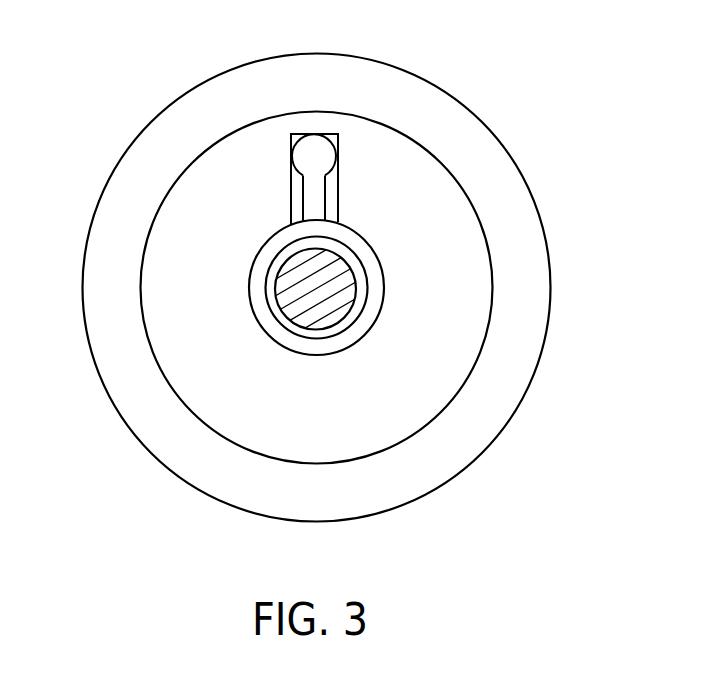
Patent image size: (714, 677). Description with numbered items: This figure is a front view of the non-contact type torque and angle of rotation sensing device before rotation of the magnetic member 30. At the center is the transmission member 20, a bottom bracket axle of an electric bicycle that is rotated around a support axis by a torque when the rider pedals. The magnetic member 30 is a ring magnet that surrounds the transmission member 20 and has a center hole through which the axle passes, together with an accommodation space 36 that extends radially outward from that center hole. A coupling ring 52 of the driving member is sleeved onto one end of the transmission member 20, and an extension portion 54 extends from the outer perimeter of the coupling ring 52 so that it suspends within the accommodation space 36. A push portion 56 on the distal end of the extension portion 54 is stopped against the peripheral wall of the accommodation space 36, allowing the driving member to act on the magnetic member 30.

The magnetic member 30 is at (463, 103).
The accommodation space 36 is at (338, 192).
The push portion 56 is at (292, 174).
The extension portion 54 is at (292, 203).
The coupling ring 52 is at (368, 293).
The transmission member 20 is at (333, 308).